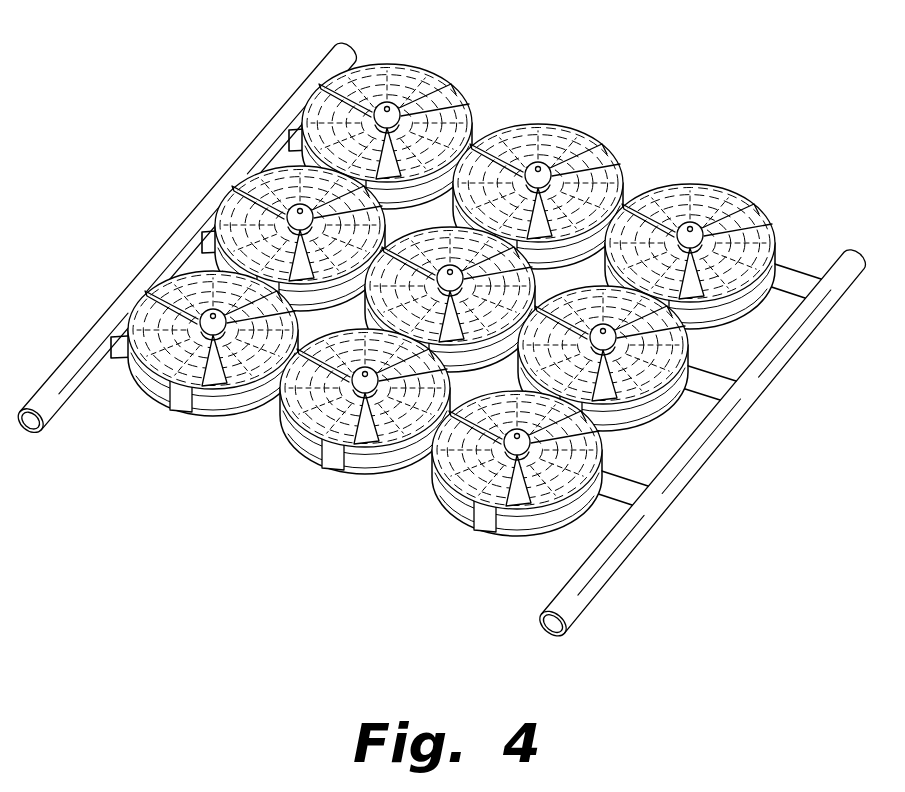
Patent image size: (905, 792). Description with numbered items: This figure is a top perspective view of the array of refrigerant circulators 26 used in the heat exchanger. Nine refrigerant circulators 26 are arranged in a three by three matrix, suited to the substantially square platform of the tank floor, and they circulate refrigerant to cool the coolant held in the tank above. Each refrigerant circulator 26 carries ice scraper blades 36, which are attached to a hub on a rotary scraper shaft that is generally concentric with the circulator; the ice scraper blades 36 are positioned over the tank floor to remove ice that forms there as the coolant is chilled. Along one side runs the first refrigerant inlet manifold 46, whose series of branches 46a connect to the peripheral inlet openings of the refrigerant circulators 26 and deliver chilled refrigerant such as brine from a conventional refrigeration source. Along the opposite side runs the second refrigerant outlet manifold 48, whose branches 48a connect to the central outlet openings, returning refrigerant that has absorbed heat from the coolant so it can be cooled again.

The refrigerant circulator 26 is at (533, 126).
The ice scraper blade 36 is at (603, 147).
The first refrigerant inlet manifold 46 is at (687, 493).
The branch 46a is at (627, 470).
The second refrigerant outlet manifold 48 is at (148, 258).
The branch 48a is at (272, 127).